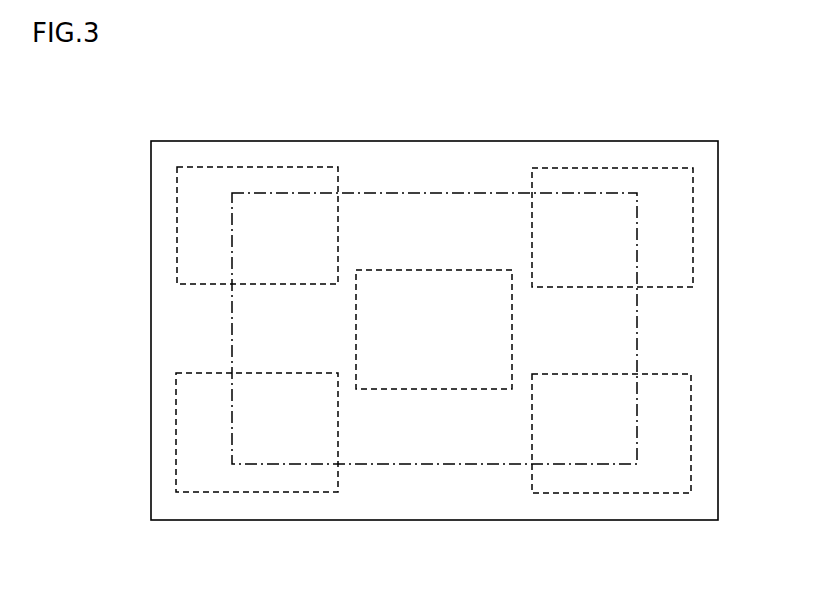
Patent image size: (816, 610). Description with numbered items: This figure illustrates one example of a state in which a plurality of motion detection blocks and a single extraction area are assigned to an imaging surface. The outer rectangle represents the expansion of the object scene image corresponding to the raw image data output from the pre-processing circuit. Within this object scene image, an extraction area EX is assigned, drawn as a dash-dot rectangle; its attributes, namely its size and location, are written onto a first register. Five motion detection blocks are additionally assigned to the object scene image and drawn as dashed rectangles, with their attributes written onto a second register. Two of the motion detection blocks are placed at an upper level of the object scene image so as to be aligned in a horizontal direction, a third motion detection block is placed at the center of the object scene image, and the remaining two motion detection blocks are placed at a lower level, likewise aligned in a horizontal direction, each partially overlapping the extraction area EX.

The extraction area EX is at (433, 465).